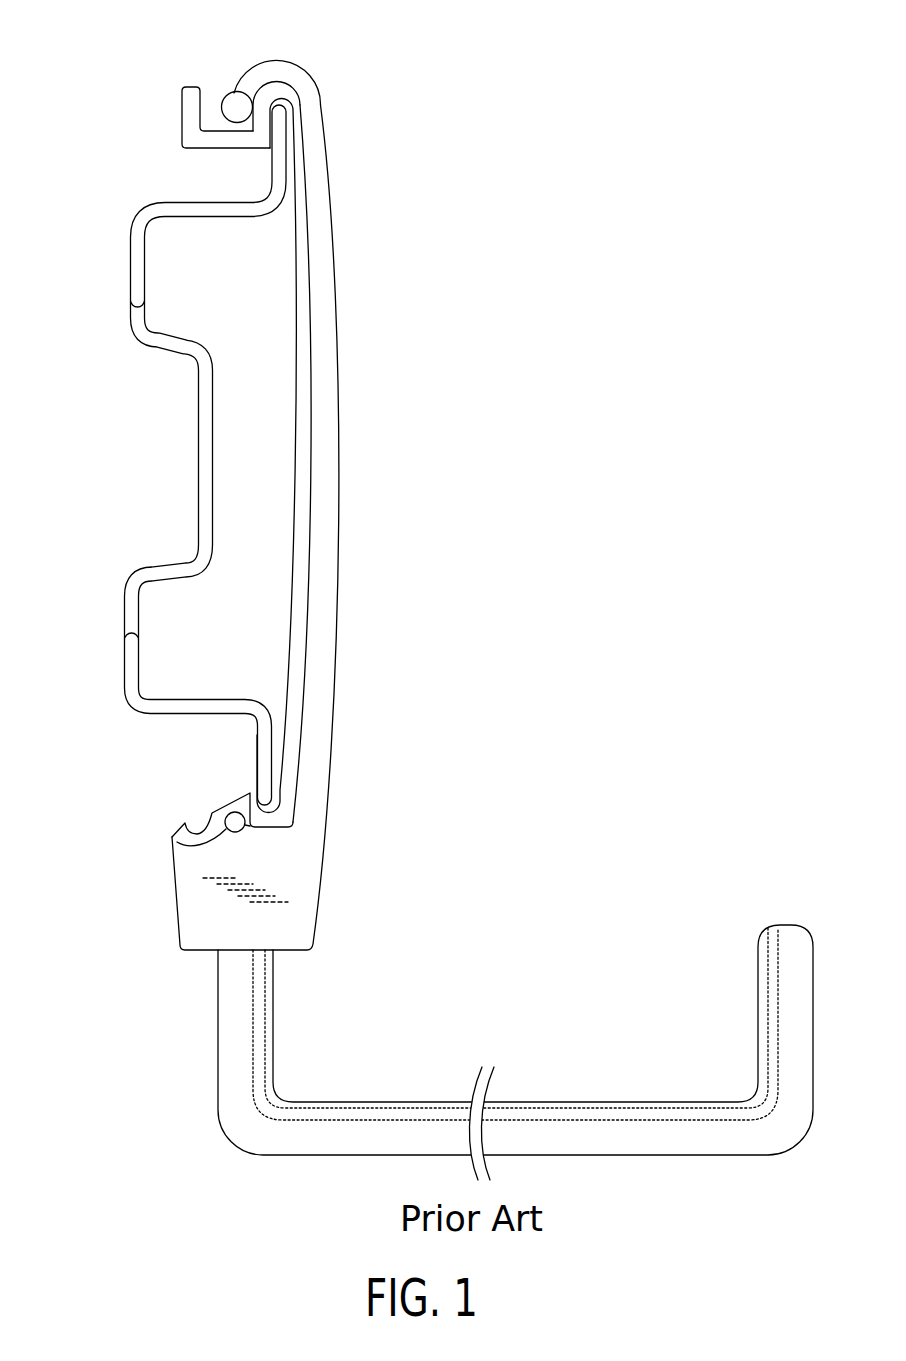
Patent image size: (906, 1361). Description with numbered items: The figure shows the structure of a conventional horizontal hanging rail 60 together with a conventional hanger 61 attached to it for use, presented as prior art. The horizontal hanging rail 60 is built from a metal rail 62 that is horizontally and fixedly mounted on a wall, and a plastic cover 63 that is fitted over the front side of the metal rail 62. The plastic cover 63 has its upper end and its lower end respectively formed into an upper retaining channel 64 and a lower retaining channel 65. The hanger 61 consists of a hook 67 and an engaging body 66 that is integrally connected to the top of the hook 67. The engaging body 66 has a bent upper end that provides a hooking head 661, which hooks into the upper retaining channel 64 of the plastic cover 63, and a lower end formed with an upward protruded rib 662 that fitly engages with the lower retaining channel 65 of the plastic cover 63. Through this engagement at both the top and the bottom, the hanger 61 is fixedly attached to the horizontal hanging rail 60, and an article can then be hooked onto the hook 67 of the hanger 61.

The horizontal hanging rail 60 is at (166, 185).
The hanger 61 is at (356, 866).
The metal rail 62 is at (205, 443).
The plastic cover 63 is at (300, 458).
The upper retaining channel 64 is at (210, 97).
The lower retaining channel 65 is at (247, 816).
The engaging body 66 is at (322, 663).
The hook 67 is at (620, 1113).
The hooking head 661 is at (236, 122).
The upward protruded rib 662 is at (231, 835).